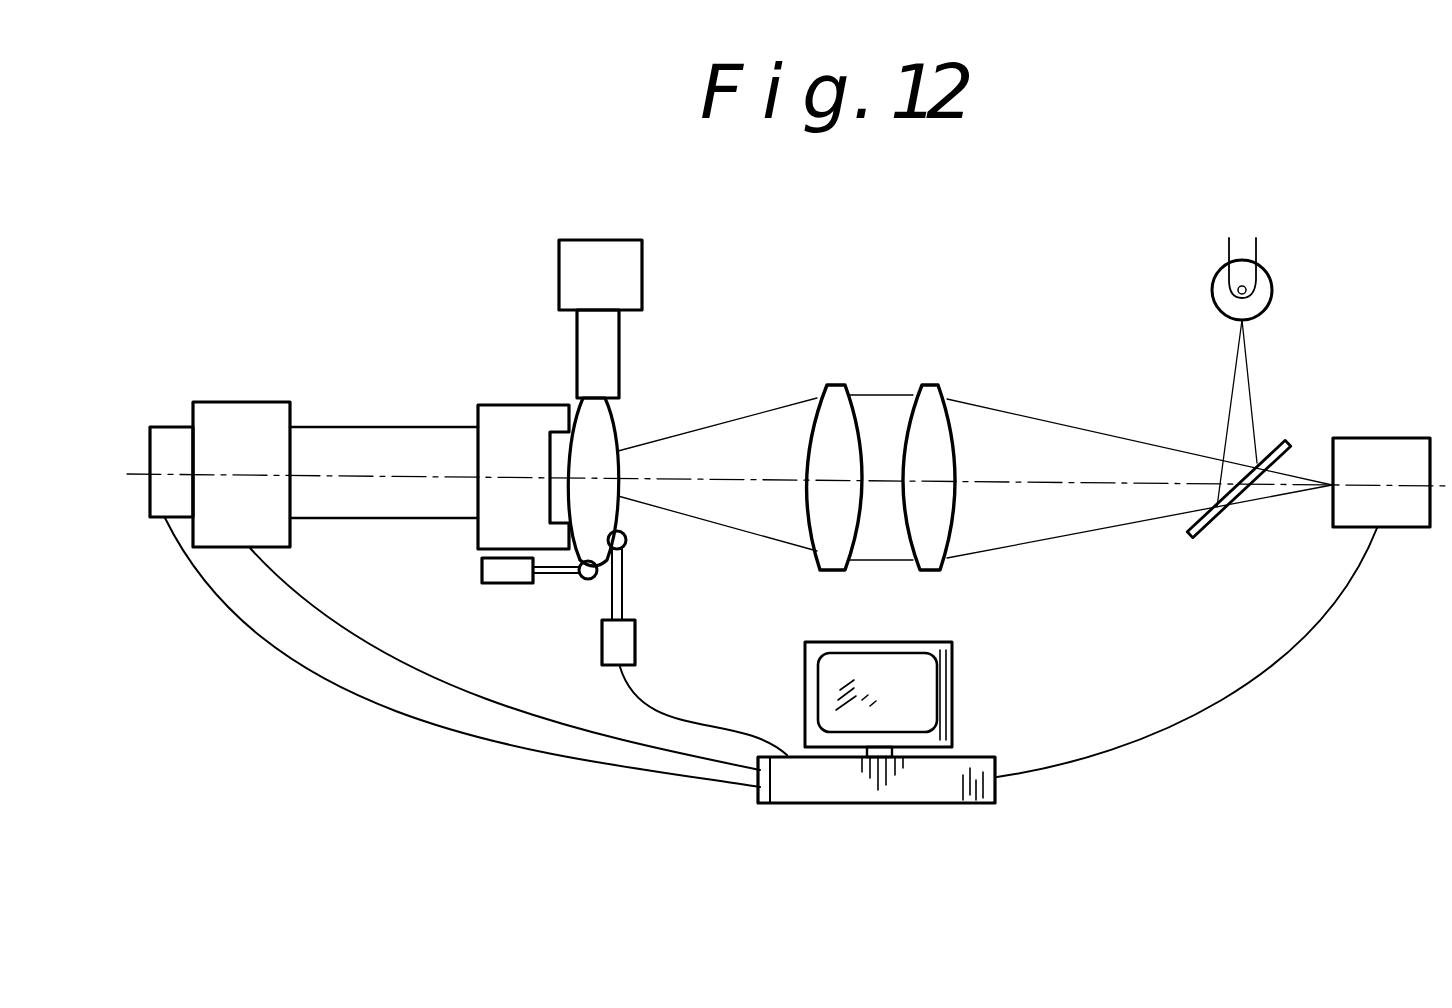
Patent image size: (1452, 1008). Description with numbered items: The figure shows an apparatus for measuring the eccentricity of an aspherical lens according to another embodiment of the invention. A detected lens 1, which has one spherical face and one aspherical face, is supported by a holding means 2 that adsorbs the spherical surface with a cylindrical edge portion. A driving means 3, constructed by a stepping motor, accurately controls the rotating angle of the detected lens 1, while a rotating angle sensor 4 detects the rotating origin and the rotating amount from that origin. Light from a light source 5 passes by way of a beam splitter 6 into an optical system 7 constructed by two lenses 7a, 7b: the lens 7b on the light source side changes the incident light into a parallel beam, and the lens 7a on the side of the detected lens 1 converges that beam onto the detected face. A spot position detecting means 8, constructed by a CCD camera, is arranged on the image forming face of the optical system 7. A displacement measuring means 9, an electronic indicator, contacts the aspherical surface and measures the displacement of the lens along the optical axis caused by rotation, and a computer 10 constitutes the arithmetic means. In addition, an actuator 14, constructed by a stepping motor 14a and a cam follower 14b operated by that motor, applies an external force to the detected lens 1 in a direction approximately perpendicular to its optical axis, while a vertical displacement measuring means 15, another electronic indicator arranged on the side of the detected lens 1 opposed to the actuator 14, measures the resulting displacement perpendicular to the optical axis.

The detected lens 1 is at (610, 433).
The holding means 2 is at (513, 406).
The driving means 3 is at (243, 404).
The rotating angle sensor 4 is at (168, 432).
The light source 5 is at (1272, 294).
The beam splitter 6 is at (1285, 440).
The optical system 7 is at (881, 417).
The lens 7a is at (835, 396).
The lens 7b is at (929, 396).
The spot position detecting means 8 is at (1378, 440).
The displacement measuring means 9 is at (629, 641).
The computer 10 is at (928, 790).
The actuator 14 is at (680, 314).
The stepping motor 14a is at (630, 270).
The cam follower 14b is at (608, 348).
The vertical displacement measuring means 15 is at (515, 578).